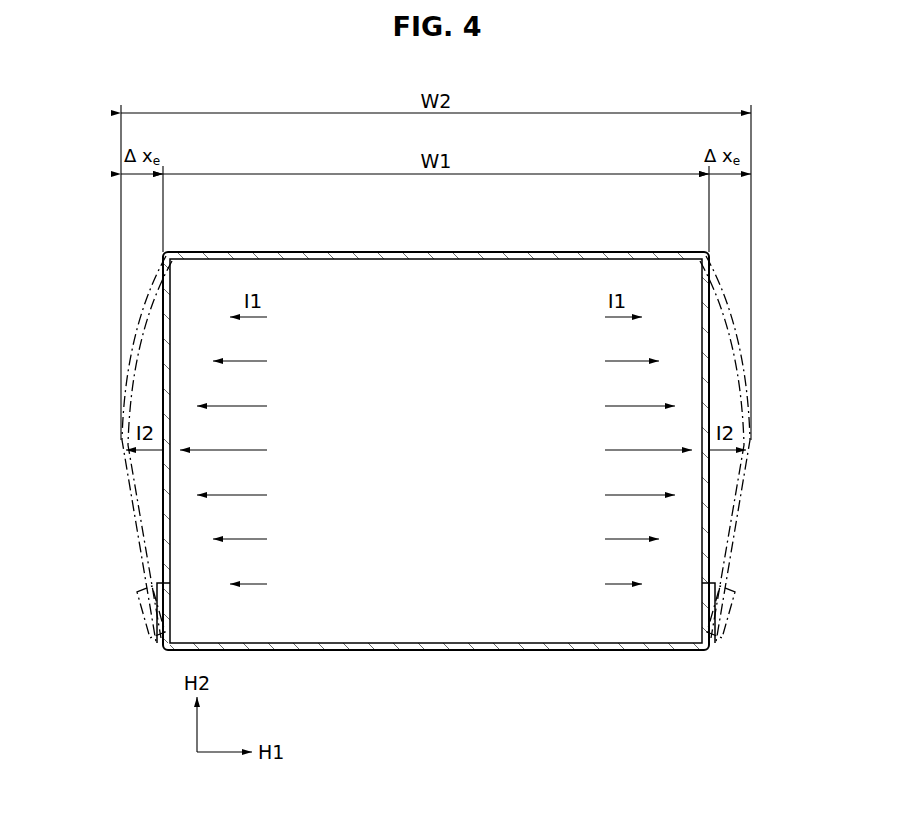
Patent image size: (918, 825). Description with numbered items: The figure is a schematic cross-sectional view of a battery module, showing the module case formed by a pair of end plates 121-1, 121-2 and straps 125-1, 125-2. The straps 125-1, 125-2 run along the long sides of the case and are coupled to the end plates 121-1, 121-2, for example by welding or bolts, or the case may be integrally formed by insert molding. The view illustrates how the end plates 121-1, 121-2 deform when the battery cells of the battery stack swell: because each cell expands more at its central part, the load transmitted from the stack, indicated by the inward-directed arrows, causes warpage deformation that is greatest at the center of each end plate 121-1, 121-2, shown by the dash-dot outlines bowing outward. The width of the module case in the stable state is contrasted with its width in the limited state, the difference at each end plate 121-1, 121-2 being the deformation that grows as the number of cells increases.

The strap 125-1 is at (486, 250).
The strap 125-2 is at (485, 653).
The end plate 121-1 is at (163, 555).
The end plate 121-2 is at (709, 555).